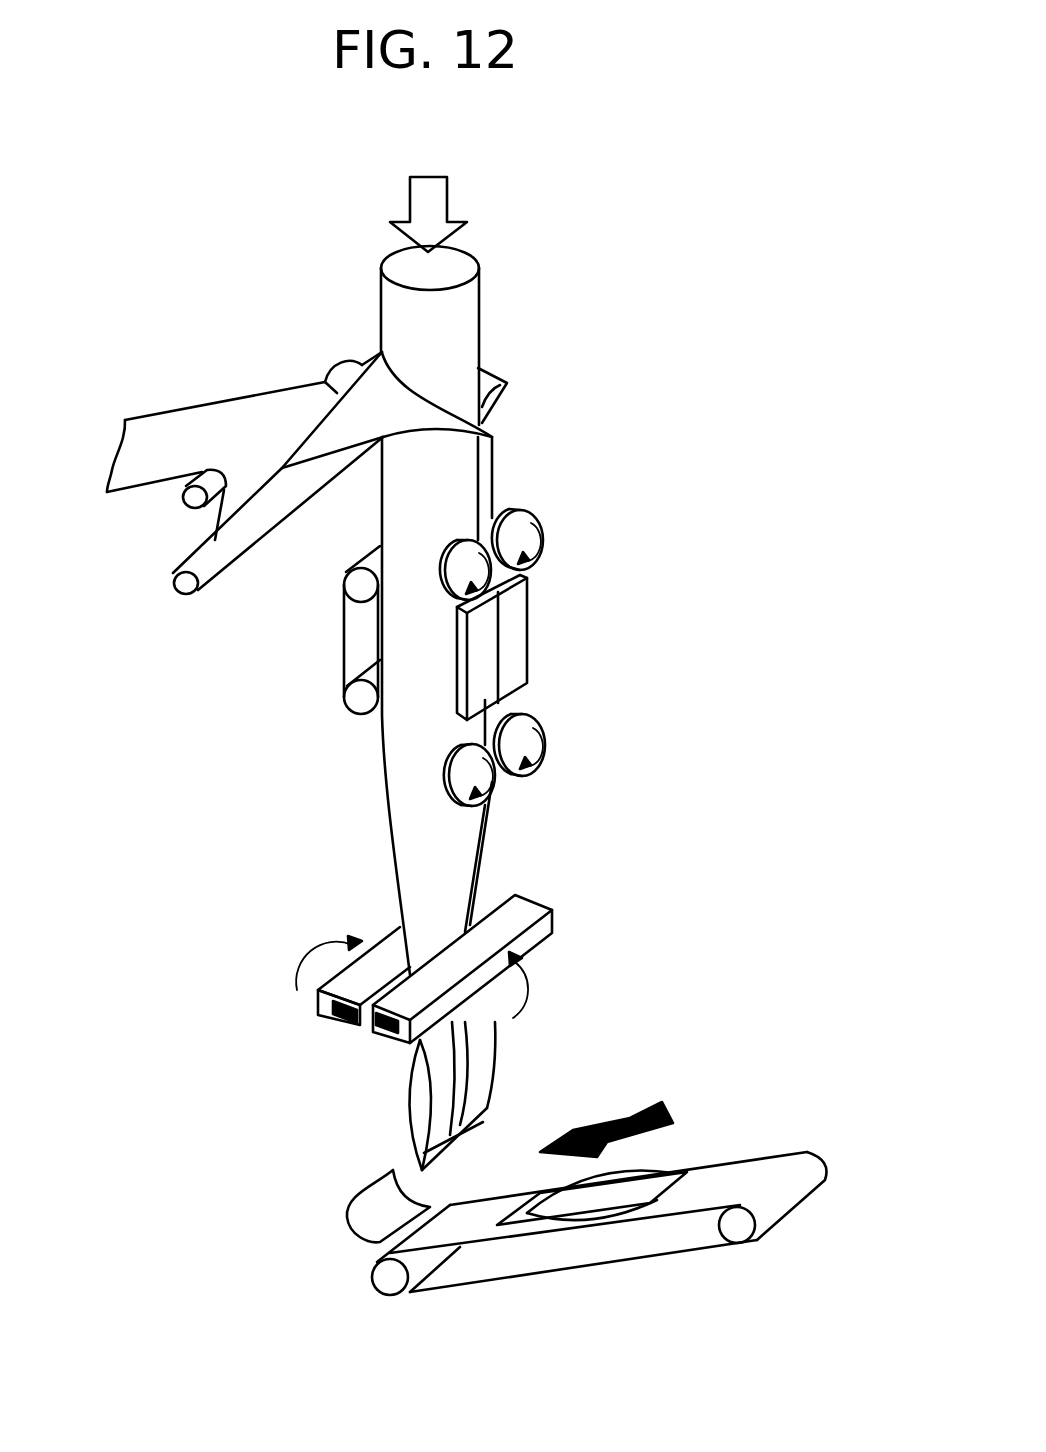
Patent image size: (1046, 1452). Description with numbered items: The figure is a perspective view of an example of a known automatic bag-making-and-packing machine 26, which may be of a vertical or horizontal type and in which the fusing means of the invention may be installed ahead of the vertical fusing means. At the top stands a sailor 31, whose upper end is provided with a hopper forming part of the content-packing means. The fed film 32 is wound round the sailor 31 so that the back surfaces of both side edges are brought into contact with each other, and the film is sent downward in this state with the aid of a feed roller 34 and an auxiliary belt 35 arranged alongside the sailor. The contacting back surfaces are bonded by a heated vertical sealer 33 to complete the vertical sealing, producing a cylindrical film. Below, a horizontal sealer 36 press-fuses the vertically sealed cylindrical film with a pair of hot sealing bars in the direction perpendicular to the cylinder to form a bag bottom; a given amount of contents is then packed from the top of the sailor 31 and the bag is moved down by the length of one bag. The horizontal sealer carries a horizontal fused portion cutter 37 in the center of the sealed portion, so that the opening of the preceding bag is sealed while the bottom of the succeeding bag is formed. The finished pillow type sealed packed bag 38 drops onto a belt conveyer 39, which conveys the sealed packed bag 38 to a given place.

The automatic bag-making-and-packing machine 26 is at (622, 285).
The sailor 31 is at (455, 323).
The film 32 is at (187, 428).
The vertical sealer 33 is at (515, 635).
The feed roller 34 is at (532, 533).
The auxiliary belt 35 is at (352, 641).
The horizontal sealer 36 is at (523, 912).
The horizontal fused portion cutter 37 is at (358, 1035).
The sealed packed bag 38 is at (480, 1062).
The belt conveyer 39 is at (745, 1170).